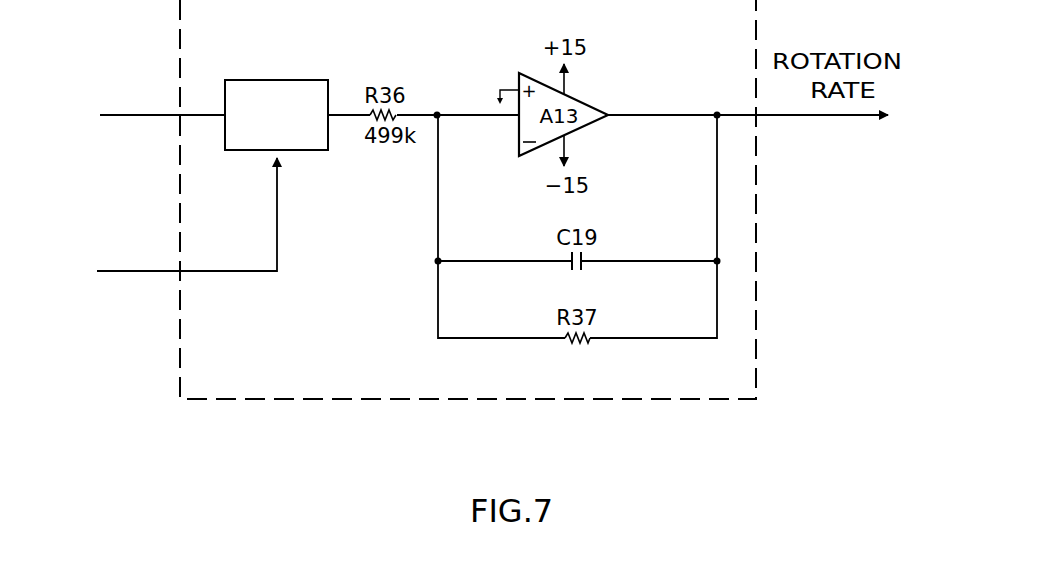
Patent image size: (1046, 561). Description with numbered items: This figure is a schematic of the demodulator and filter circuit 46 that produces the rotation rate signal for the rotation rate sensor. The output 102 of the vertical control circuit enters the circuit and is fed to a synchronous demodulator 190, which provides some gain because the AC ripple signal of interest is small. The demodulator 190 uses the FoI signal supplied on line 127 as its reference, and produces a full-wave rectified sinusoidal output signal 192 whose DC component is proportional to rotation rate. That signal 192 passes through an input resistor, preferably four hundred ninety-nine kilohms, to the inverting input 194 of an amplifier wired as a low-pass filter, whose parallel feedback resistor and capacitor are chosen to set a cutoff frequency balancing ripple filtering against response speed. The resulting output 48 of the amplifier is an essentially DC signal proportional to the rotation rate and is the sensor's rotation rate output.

The demodulator and filter circuit 46 is at (158, 384).
The output of the vertical control circuit 102 is at (137, 115).
The synchronous demodulator 190 is at (300, 80).
The full-wave rectified sinusoidal output signal 192 is at (350, 117).
The inverting input of amplifier A13 194 is at (460, 115).
The output of A13 48 is at (737, 115).
The line carrying FoI 127 is at (137, 271).